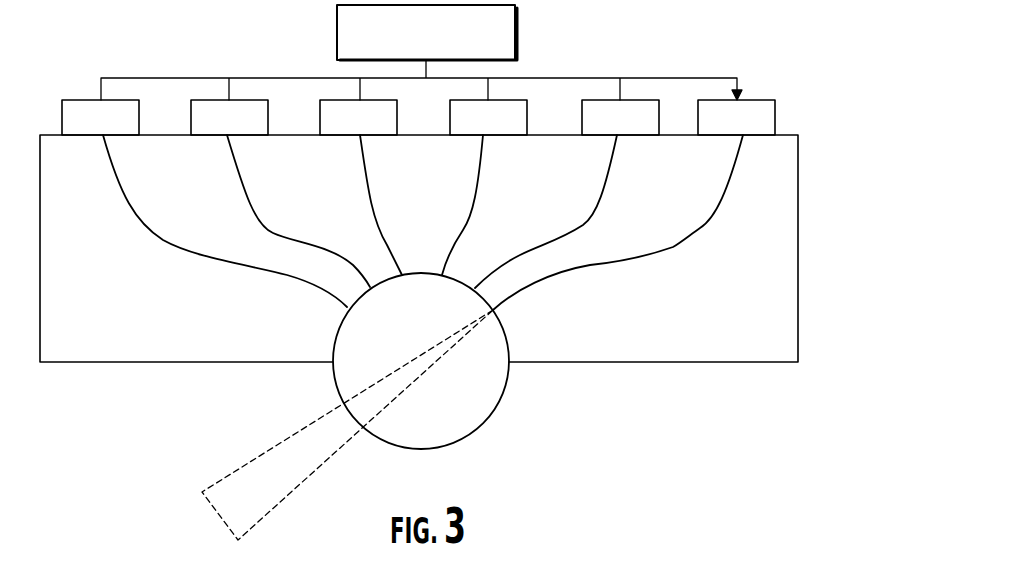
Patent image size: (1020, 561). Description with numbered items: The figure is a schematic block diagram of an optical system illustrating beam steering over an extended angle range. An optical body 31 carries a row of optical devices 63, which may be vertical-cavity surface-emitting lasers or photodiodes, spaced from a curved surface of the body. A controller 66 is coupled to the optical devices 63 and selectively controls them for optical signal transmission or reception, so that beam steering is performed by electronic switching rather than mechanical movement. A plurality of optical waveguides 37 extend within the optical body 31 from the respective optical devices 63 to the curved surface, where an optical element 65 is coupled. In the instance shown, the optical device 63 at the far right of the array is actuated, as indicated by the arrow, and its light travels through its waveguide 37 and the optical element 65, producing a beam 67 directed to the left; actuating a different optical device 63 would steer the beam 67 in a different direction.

The controller 66 is at (517, 23).
The optical devices 63 is at (775, 100).
The optical body 31 is at (798, 215).
The optical waveguides 37 is at (673, 247).
The optical element 65 is at (490, 415).
The beam 67 is at (258, 447).